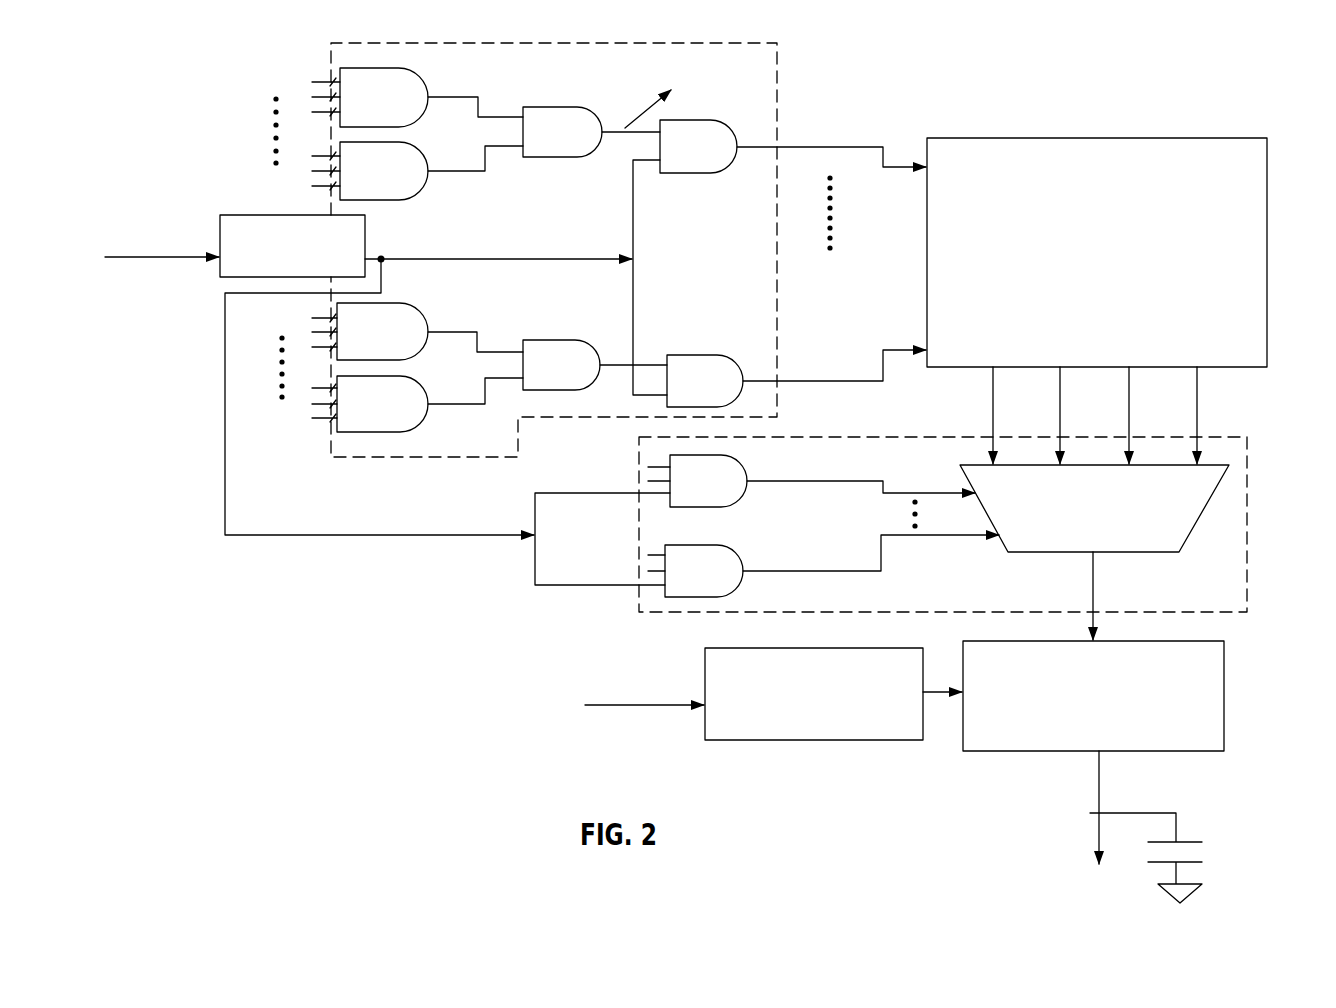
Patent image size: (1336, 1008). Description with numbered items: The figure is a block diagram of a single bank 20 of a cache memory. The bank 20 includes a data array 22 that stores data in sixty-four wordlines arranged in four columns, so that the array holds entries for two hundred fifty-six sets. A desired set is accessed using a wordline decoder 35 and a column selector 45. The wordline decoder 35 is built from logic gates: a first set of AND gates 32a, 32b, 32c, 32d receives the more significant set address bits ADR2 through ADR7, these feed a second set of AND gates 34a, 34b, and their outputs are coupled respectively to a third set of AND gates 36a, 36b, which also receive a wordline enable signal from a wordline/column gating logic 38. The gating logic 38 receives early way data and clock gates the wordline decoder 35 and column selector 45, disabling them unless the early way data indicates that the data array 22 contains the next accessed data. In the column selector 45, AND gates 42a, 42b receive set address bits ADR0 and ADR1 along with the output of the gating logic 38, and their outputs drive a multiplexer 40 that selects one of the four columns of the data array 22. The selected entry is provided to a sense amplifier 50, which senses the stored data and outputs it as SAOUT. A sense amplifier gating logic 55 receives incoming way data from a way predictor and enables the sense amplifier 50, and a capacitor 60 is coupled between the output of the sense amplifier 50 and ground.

The bank 20 is at (202, 195).
The data array 22 is at (1173, 138).
The AND gate 32a is at (424, 88).
The AND gate 32b is at (422, 188).
The AND gate 32c is at (400, 303).
The AND gate 32d is at (407, 383).
The AND gate 34a is at (555, 107).
The AND gate 34b is at (553, 340).
The wordline decoder 35 is at (779, 91).
The AND gate 36a is at (697, 119).
The AND gate 36b is at (697, 355).
The wordline/column gating logic 38 is at (365, 248).
The multiplexer 40 is at (1200, 510).
The AND gate 42a is at (747, 472).
The AND gate 42b is at (737, 553).
The column selector 45 is at (1247, 447).
The sense amplifier 50 is at (1224, 684).
The sense amplifier gating logic 55 is at (855, 740).
The capacitor 60 is at (1220, 826).